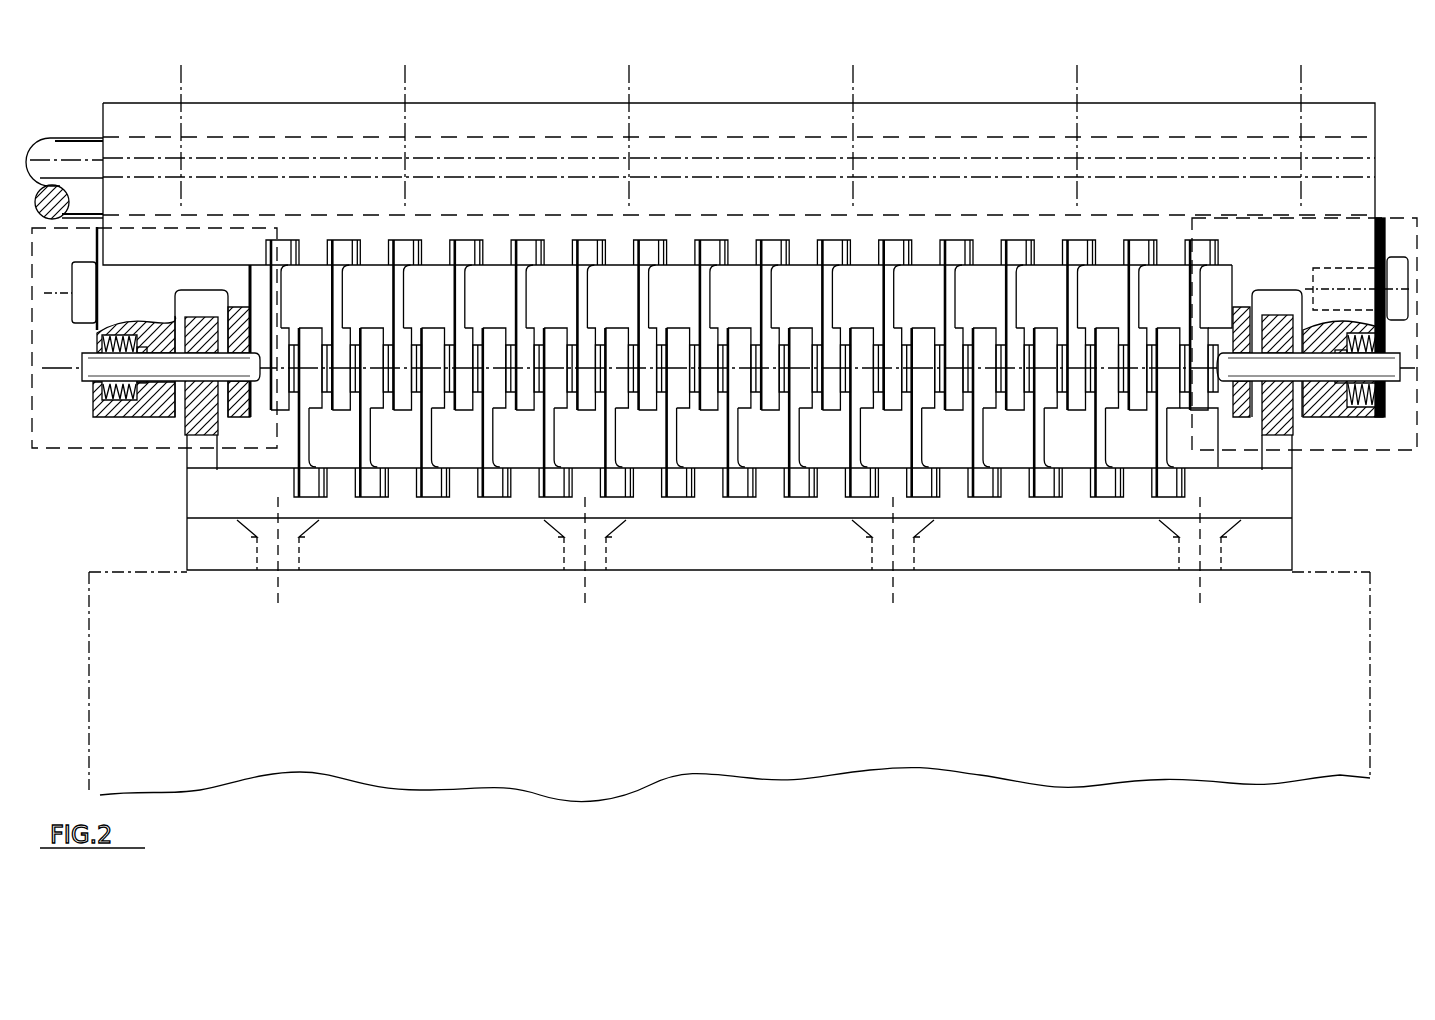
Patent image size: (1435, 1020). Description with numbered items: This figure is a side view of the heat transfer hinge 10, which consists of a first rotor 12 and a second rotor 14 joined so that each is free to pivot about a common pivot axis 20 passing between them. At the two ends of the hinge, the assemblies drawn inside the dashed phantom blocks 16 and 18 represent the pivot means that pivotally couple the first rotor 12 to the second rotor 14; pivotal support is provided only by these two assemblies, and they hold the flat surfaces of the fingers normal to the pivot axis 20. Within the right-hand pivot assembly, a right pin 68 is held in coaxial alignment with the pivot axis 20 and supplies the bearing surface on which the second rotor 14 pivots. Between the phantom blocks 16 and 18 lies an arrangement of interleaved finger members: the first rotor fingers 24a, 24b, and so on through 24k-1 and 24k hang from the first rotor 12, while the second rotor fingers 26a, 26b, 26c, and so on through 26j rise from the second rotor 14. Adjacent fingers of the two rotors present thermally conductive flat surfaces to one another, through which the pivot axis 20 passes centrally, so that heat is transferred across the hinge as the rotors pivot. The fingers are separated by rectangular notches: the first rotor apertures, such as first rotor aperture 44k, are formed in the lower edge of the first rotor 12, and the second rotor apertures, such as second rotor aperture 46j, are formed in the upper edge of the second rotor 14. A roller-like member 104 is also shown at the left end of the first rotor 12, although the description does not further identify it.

The heat transfer hinge 10 is at (1143, 97).
The first rotor 12 is at (520, 129).
The second rotor 14 is at (450, 566).
The phantom block 16 is at (1372, 449).
The phantom block 18 is at (72, 442).
The pivot axis 20 is at (57, 368).
The first rotor finger 24a is at (1201, 250).
The first rotor finger 24b is at (1086, 248).
The first rotor finger 24k is at (298, 314).
The first rotor finger 24k-1 is at (340, 250).
The second rotor finger 26a is at (1166, 484).
The second rotor finger 26b is at (1107, 488).
The second rotor finger 26c is at (1046, 488).
The second rotor finger 26j is at (296, 425).
The first rotor aperture 44k is at (284, 229).
The second rotor aperture 46j is at (292, 480).
The right pin 68 is at (1228, 372).
The feed roller 104 is at (85, 150).